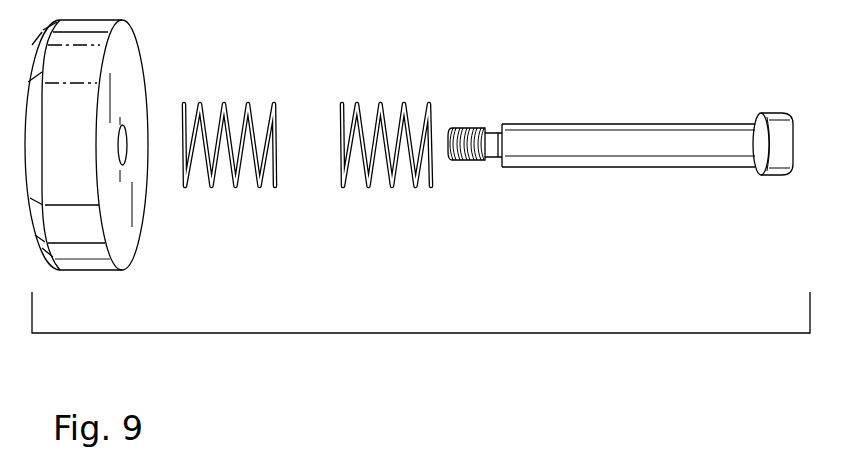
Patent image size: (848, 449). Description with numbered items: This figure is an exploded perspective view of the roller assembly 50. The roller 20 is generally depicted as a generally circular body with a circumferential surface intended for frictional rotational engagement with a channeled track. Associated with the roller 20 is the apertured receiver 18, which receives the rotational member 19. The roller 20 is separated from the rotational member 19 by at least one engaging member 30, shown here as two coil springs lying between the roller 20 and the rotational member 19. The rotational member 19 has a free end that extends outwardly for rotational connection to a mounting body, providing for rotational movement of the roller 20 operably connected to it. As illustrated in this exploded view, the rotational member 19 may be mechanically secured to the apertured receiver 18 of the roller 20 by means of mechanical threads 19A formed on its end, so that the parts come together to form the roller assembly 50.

The apertured receiver 18 is at (123, 133).
The roller 20 is at (123, 232).
The engaging member 30 is at (258, 188).
The rotational member 19 is at (620, 179).
The mechanical threads 19A is at (465, 128).
The roller assembly 50 is at (432, 334).